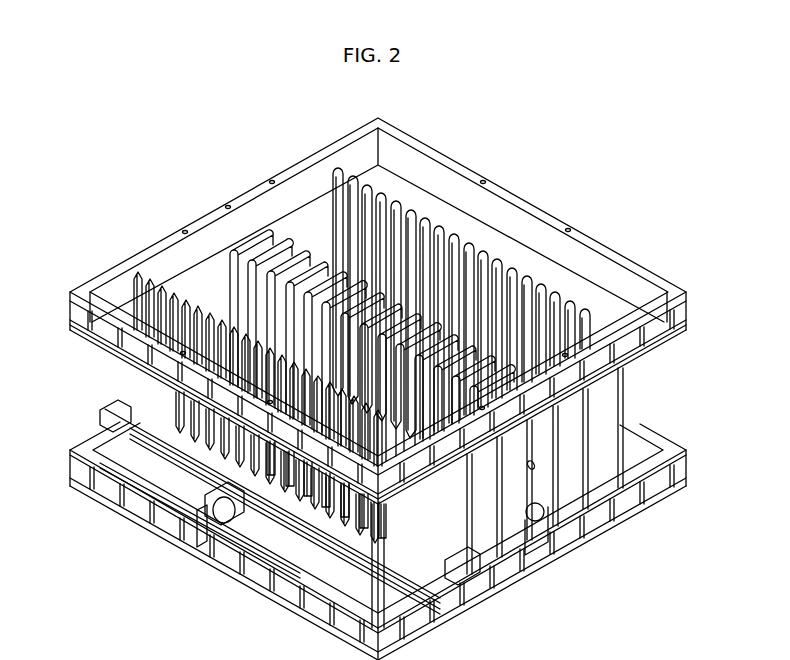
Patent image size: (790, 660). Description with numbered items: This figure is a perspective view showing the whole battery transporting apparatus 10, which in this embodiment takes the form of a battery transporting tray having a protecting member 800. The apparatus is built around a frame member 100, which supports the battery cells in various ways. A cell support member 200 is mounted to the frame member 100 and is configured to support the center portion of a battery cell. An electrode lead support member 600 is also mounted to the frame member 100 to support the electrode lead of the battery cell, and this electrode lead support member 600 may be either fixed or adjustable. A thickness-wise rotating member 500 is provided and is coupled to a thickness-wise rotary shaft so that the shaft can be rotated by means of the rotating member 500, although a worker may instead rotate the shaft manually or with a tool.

The battery transporting apparatus 10 is at (132, 111).
The frame member 100 is at (108, 413).
The cell support member 200 is at (237, 247).
The thickness-wise rotating member 500 is at (542, 587).
The electrode lead support member 600 is at (336, 170).
The protecting member 800 is at (537, 207).